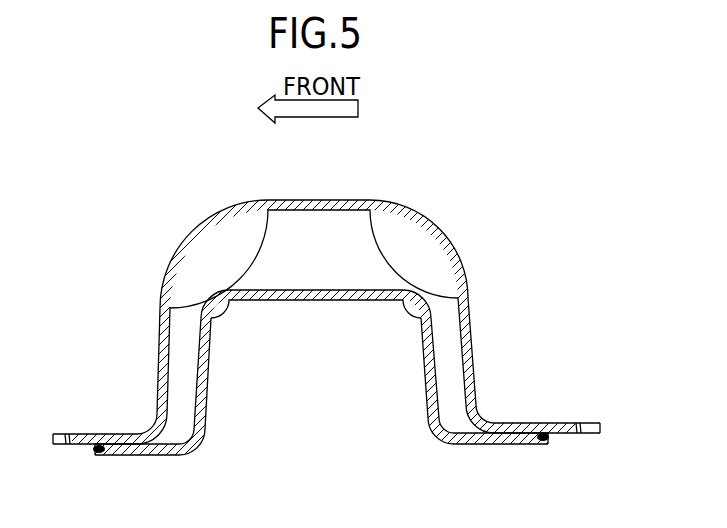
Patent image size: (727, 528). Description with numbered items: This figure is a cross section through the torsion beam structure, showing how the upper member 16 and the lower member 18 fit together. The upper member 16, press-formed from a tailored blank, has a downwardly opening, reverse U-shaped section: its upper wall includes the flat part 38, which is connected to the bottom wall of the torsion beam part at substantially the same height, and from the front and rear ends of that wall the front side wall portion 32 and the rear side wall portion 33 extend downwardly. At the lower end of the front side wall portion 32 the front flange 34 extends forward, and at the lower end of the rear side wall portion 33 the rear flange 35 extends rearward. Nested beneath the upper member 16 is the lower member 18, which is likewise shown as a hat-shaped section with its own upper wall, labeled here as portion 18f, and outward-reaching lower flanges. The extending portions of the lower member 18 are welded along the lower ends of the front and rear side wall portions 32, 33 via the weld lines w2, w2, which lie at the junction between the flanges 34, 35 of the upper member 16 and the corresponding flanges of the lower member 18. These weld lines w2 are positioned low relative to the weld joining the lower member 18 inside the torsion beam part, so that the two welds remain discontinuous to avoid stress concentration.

The upper member 16 is at (382, 196).
The flat part 38 is at (316, 199).
The front side wall portion 32 is at (160, 332).
The rear side wall portion 33 is at (468, 318).
The front flange 34 is at (83, 433).
The rear flange 35 is at (561, 427).
The lower member 18 is at (442, 442).
The upper wall of lower member 18f is at (317, 300).
The weld line w2 is at (97, 452).